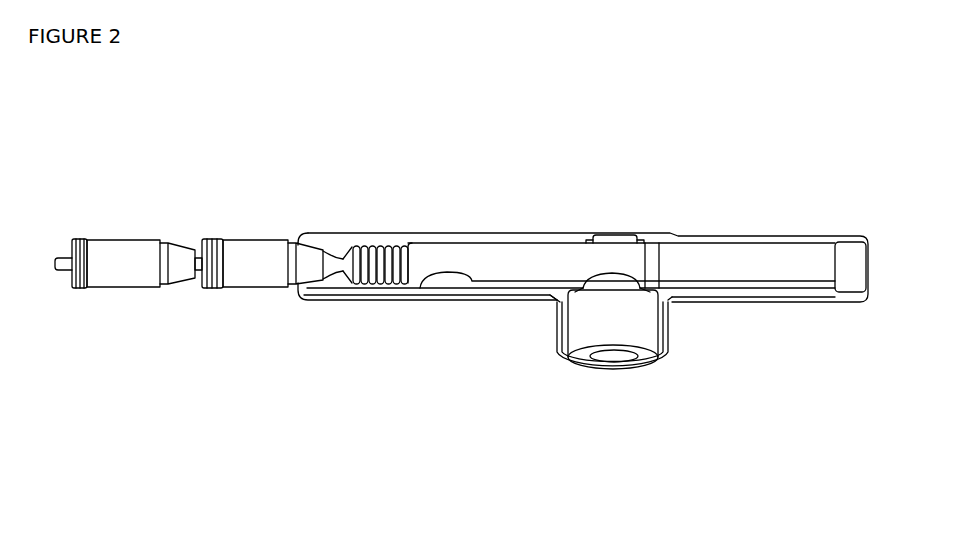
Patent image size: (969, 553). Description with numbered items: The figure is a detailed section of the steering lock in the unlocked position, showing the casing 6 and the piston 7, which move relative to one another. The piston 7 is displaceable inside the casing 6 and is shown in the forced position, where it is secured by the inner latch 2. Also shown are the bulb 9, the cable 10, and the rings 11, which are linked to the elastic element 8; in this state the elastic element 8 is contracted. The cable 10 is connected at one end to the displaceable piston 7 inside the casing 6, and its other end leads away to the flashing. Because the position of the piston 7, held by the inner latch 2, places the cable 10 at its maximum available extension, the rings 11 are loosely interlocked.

The inner latch 2 is at (612, 240).
The casing 6 is at (415, 292).
The piston 7 is at (553, 255).
The elastic element 8 is at (390, 247).
The bulb 9 is at (612, 333).
The cable 10 is at (328, 265).
The rings 11 is at (260, 253).